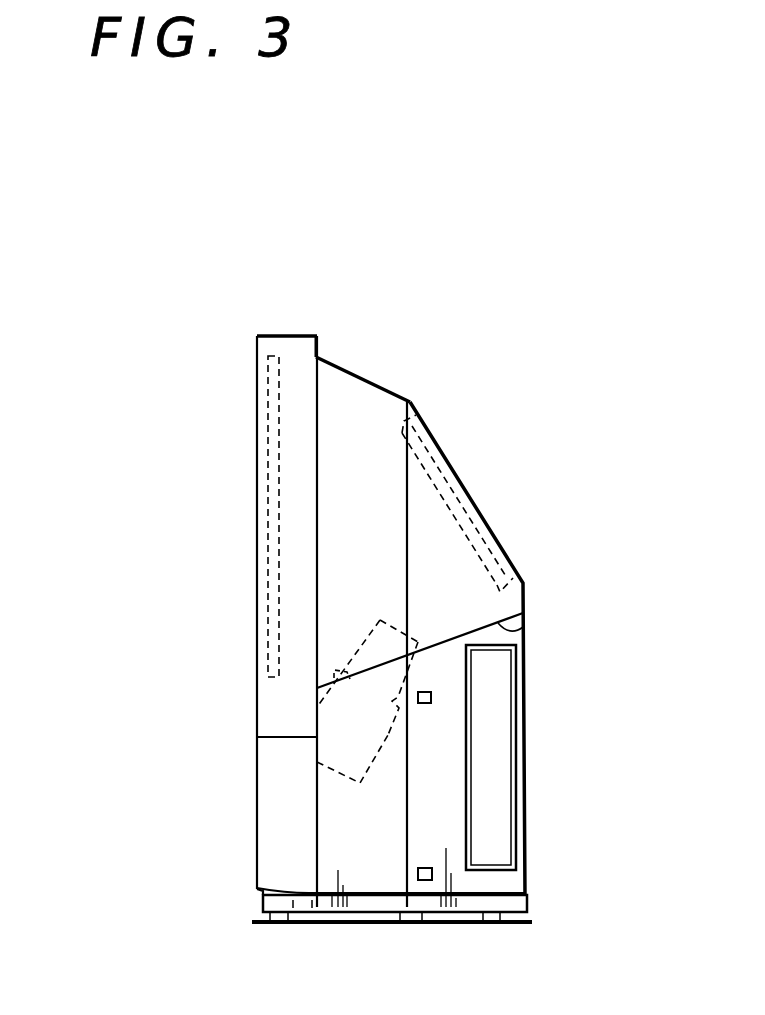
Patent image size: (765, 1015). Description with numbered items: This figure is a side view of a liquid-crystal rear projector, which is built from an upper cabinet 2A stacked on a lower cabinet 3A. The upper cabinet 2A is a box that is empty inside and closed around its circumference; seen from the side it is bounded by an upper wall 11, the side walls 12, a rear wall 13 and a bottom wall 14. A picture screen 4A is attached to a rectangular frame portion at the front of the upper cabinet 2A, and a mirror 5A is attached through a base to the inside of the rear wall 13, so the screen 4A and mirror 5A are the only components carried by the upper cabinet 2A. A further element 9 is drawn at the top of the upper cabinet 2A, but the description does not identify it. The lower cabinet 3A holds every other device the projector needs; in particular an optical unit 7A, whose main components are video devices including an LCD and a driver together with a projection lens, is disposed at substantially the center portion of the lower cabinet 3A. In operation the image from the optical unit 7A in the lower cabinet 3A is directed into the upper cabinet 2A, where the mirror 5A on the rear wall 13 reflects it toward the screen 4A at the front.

The upper cabinet 2A is at (233, 431).
The lower cabinet 3A is at (236, 806).
The screen 4A is at (270, 544).
The mirror 5A is at (470, 512).
The optical unit 7A is at (388, 736).
The top housing 9 is at (287, 336).
The upper wall 11 is at (363, 372).
The side walls 12 is at (374, 426).
The rear wall 13 is at (447, 452).
The bottom wall 14 is at (523, 631).